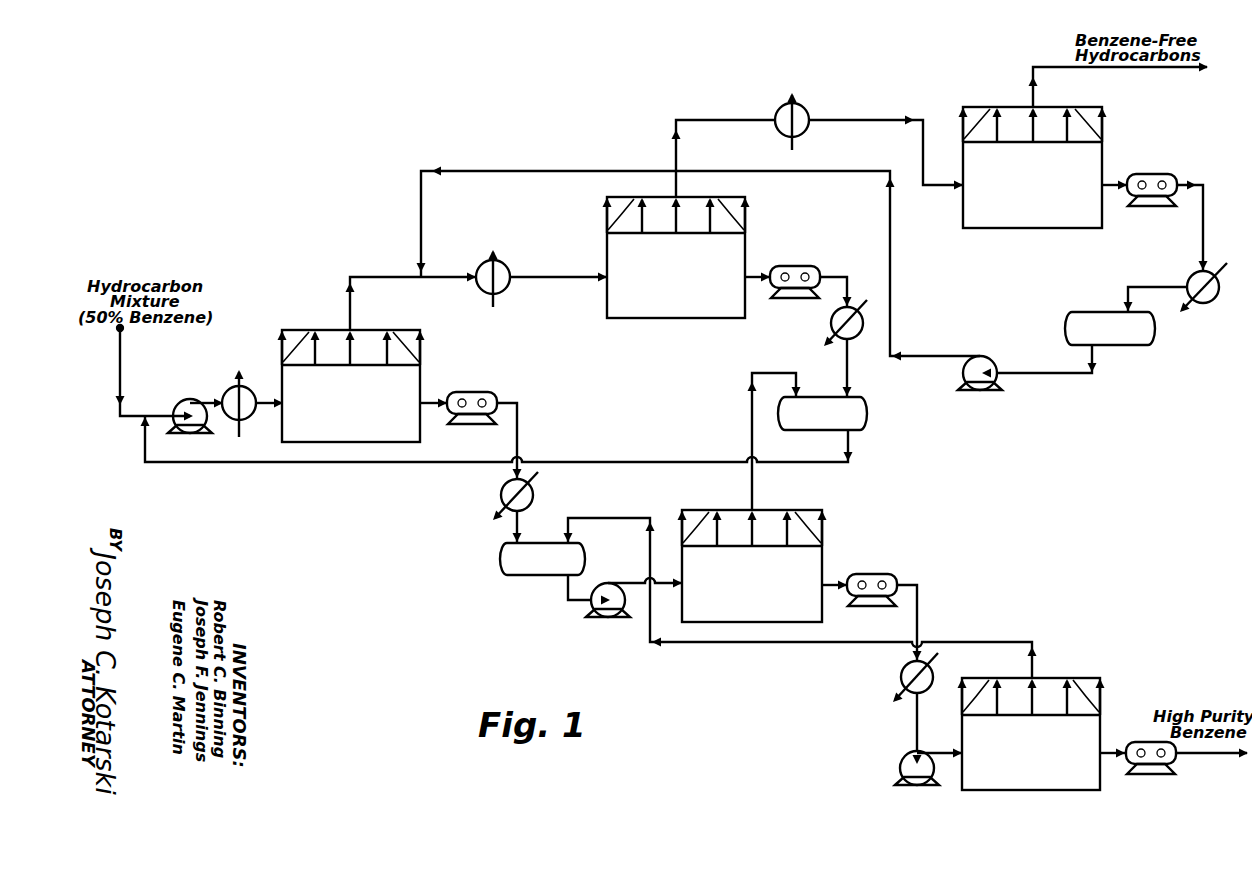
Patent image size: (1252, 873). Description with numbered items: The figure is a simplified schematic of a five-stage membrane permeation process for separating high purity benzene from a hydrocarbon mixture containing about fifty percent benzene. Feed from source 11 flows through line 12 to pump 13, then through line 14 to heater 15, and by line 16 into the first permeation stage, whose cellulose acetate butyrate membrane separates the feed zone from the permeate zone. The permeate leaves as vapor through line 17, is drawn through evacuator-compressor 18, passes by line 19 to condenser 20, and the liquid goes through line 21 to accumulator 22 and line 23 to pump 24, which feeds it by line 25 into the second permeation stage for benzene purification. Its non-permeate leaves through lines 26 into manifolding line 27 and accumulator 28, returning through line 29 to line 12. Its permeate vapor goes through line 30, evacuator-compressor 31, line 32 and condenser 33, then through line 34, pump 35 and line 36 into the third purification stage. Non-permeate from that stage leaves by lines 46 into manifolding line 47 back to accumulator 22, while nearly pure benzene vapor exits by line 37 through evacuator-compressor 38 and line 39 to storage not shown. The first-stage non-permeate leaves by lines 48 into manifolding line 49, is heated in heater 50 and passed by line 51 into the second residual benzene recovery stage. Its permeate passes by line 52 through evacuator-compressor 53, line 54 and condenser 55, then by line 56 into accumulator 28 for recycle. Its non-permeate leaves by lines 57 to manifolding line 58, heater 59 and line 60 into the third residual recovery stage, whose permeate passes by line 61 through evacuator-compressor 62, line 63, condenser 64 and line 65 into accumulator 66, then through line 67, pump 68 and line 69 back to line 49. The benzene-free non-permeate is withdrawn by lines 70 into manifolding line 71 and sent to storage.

The source 11 is at (123, 331).
The line 12 is at (119, 368).
The pump 13 is at (177, 402).
The line 14 is at (206, 396).
The heater 15 is at (247, 388).
The line 16 is at (266, 407).
The line 17 is at (430, 400).
The evacuator-compressor 18 is at (480, 392).
The line 19 is at (519, 432).
The condenser 20 is at (502, 493).
The line 21 is at (519, 515).
The accumulator 22 is at (532, 570).
The line 23 is at (566, 592).
The pump 24 is at (588, 626).
The line 25 is at (632, 580).
The lines 26 is at (709, 512).
The manifolding line 27 is at (750, 446).
The accumulator 28 is at (812, 424).
The line 29 is at (850, 440).
The line 30 is at (833, 582).
The evacuator-compressor 31 is at (878, 574).
The line 32 is at (919, 614).
The condenser 33 is at (901, 673).
The line 34 is at (914, 731).
The pump 35 is at (900, 768).
The line 36 is at (946, 735).
The line 37 is at (1110, 752).
The evacuator-compressor 38 is at (1148, 775).
The line 39 is at (1200, 755).
The lines 46 is at (989, 680).
The manifolding line 47 is at (597, 518).
The lines 48 is at (309, 332).
The manifolding line 49 is at (351, 300).
The heater 50 is at (504, 268).
The line 51 is at (530, 279).
The line 52 is at (759, 275).
The evacuator-compressor 53 is at (803, 266).
The line 54 is at (849, 290).
The condenser 55 is at (831, 326).
The line 56 is at (846, 372).
The lines 57 is at (612, 218).
The manifolding line 58 is at (674, 150).
The heater 59 is at (779, 107).
The line 60 is at (850, 118).
The line 61 is at (1113, 182).
The evacuator-compressor 62 is at (1148, 174).
The line 63 is at (1202, 233).
The condenser 64 is at (1208, 305).
The line 65 is at (1157, 286).
The accumulator 66 is at (1100, 339).
The line 67 is at (1042, 375).
The pump 68 is at (988, 350).
The line 69 is at (420, 226).
The lines 70 is at (990, 109).
The manifolding line 71 is at (1031, 92).